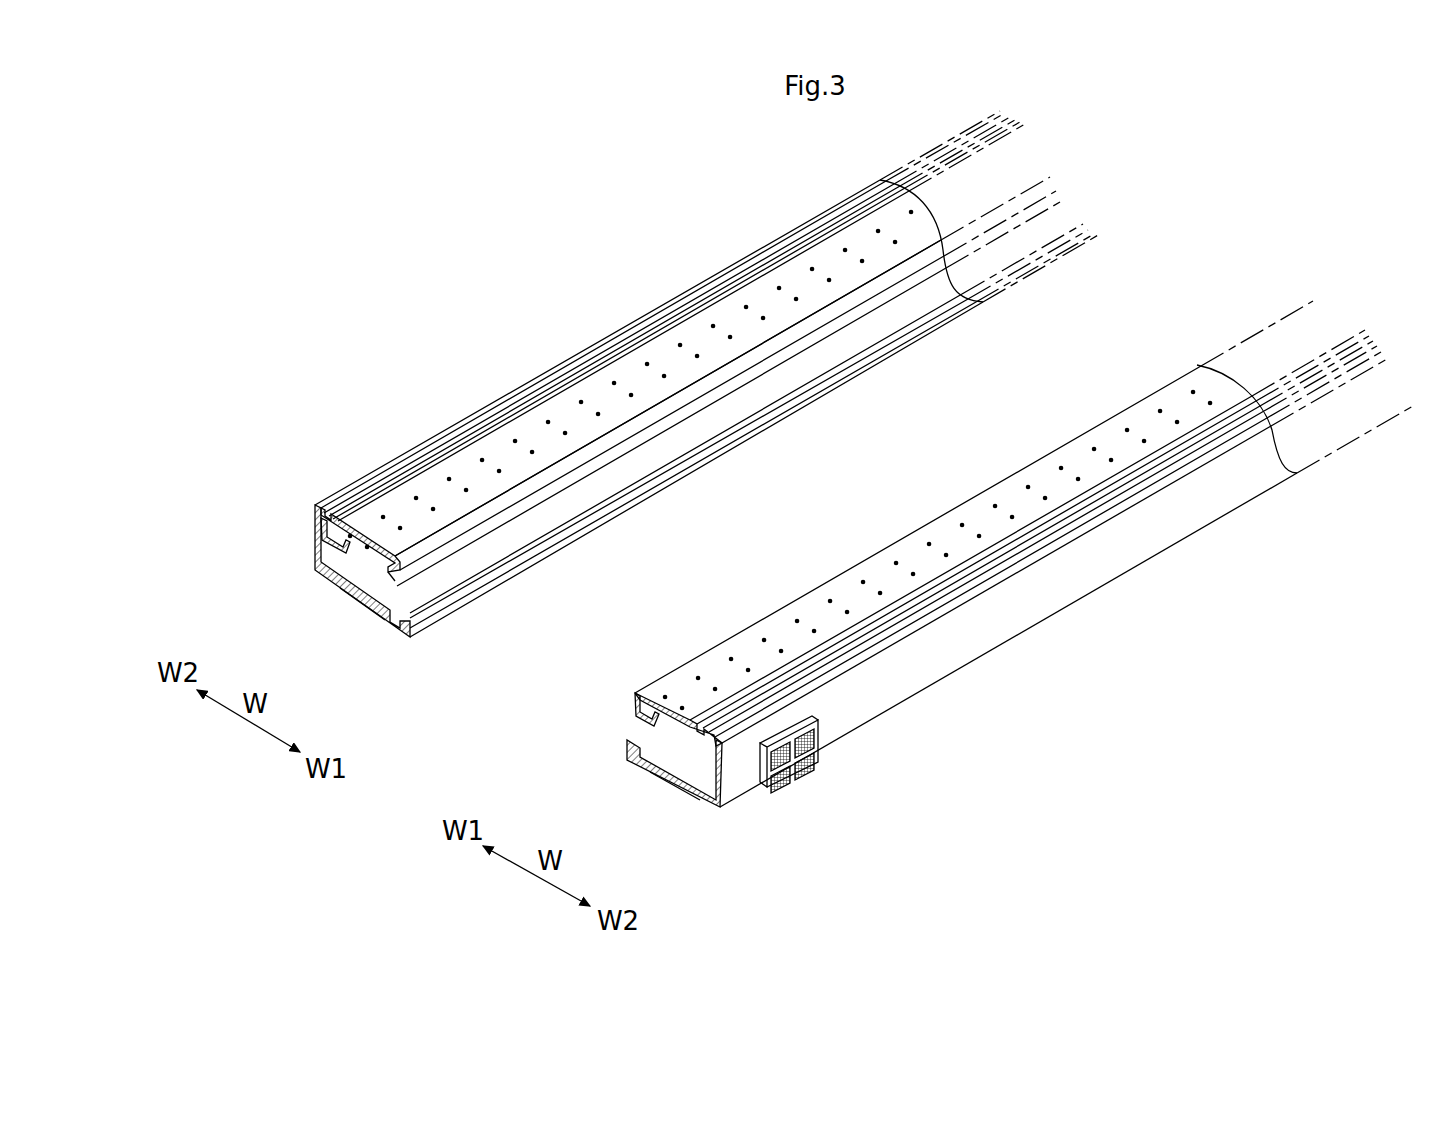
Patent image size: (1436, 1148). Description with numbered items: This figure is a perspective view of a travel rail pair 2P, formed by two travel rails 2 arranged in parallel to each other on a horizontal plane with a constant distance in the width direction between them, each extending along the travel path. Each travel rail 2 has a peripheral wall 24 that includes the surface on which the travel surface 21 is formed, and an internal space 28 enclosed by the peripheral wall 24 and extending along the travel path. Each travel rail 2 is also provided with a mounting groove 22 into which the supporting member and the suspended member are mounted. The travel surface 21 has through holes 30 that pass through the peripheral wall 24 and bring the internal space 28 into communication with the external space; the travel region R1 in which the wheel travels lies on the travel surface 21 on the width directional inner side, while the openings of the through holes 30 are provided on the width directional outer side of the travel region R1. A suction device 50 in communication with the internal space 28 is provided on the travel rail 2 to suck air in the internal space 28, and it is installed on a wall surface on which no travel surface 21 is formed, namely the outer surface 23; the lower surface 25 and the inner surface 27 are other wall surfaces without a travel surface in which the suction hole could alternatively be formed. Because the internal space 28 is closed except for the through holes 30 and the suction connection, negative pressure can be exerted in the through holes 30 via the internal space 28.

The travel rail 2 is at (905, 313).
The travel rail pair 2P is at (1248, 237).
The travel surface 21 is at (845, 243).
The mounting groove 22 is at (404, 486).
The outer surface 23 is at (312, 526).
The peripheral wall 24 is at (650, 722).
The lower surface 25 is at (383, 634).
The inner surface 27 is at (396, 578).
The internal space 28 is at (368, 570).
The through holes 30 is at (818, 278).
The suction device 50 is at (826, 720).
The travel region R1 is at (507, 486).